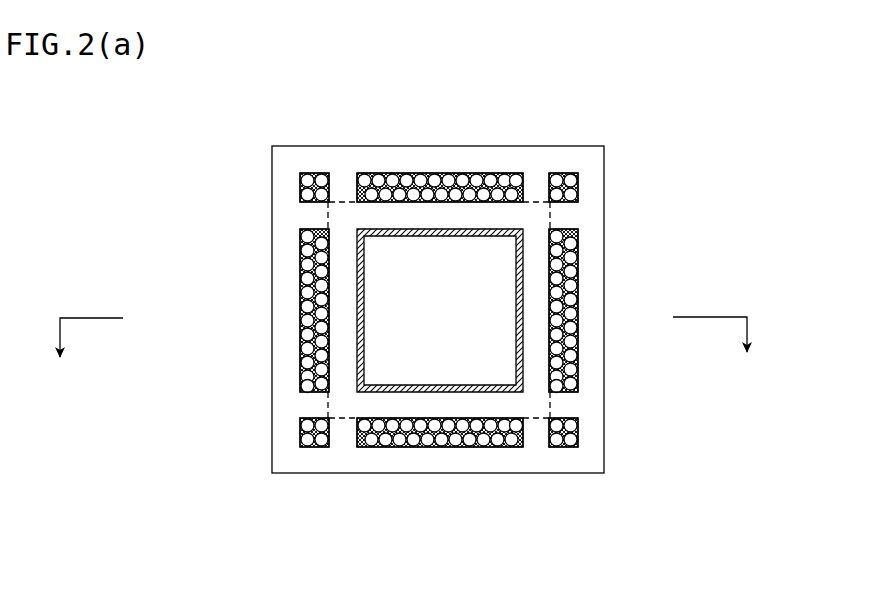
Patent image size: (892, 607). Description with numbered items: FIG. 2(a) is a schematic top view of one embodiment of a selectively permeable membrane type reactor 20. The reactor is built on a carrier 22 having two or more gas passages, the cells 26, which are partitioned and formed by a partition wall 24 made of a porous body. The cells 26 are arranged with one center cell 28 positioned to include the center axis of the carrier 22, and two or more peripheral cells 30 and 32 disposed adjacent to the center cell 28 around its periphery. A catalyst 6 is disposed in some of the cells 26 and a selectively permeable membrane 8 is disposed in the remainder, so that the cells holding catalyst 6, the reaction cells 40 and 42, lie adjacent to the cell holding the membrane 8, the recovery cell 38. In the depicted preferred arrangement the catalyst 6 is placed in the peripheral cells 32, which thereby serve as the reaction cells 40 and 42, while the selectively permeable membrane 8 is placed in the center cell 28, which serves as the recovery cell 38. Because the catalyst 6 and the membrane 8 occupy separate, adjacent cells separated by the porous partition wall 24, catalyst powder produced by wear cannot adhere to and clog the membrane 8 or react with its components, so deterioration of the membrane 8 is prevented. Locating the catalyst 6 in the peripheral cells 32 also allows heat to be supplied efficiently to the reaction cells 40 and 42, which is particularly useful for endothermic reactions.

The selectively permeable membrane type reactor 20 is at (710, 213).
The carrier 22 is at (540, 158).
The partition wall 24 is at (348, 215).
The catalyst 6 is at (453, 182).
The selectively permeable membrane 8 is at (510, 334).
The cells 26 is at (583, 184).
The center cell 28 is at (440, 310).
The peripheral cells 30 is at (439, 311).
The peripheral cells 32 is at (439, 310).
The recovery cell 38 is at (440, 310).
The reaction cell 40 is at (439, 311).
The reaction cell 42 is at (439, 310).